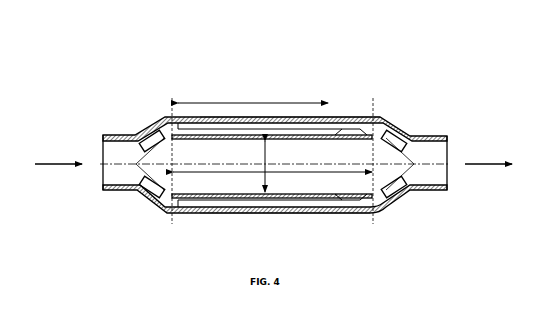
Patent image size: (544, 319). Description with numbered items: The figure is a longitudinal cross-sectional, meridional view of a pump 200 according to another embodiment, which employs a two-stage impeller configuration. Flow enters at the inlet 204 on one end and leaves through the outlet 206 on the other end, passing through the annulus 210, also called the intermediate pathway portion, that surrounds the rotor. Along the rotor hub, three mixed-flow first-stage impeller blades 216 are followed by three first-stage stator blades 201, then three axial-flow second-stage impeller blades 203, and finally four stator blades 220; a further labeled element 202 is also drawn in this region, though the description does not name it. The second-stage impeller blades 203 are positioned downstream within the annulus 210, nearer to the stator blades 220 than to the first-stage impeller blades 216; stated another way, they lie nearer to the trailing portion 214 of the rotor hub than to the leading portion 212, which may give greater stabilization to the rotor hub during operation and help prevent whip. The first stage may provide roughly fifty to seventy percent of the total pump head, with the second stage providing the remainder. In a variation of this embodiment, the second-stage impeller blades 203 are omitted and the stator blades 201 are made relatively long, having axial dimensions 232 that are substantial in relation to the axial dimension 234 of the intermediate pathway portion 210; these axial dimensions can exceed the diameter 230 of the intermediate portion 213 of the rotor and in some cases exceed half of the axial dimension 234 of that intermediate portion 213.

The pump 200 is at (491, 33).
The first-stage stator blades 201 is at (198, 201).
The inner sleeve 202 is at (247, 215).
The second-stage impeller blades 203 is at (352, 205).
The inlet 204 is at (94, 184).
The outlet 206 is at (456, 183).
The annulus 210 is at (332, 202).
The leading portion 212 is at (141, 136).
The intermediate portion 213 is at (338, 118).
The trailing portion 214 is at (414, 144).
The first-stage impeller blades 216 is at (141, 208).
The stator blades 220 is at (400, 197).
The diameter 230 is at (275, 166).
The axial dimensions 232 is at (253, 96).
The axial dimension 234 is at (272, 178).